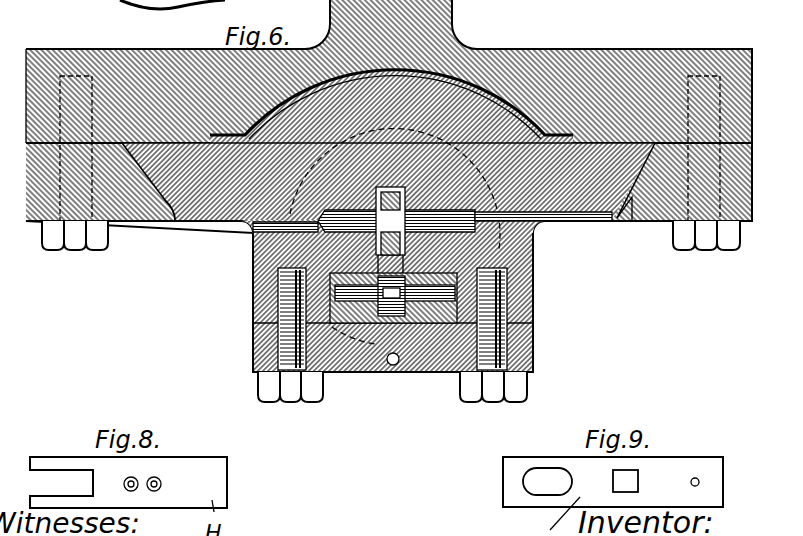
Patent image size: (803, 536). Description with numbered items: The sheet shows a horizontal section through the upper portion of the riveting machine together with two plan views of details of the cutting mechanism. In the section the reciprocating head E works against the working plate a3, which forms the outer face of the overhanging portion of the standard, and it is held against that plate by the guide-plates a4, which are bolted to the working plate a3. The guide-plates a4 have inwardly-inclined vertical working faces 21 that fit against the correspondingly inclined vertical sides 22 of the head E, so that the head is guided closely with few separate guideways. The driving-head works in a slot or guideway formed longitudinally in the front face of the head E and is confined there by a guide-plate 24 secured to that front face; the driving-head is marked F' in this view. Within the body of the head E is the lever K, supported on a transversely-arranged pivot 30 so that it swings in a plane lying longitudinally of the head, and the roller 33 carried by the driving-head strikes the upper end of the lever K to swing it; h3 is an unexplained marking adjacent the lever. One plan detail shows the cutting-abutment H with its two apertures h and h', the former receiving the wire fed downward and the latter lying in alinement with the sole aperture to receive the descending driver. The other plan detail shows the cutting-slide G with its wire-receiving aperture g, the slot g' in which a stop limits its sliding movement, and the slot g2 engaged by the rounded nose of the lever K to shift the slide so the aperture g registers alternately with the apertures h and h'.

In FIG. 6, the working plate a3 is at (510, 62).
In FIG. 6, the guide-plates a4 is at (143, 210).
In FIG. 6, the inwardly-inclined vertical working faces 21 is at (100, 223).
In FIG. 6, the inclined vertical sides 22 is at (176, 202).
In FIG. 6, the reciprocating head E is at (220, 195).
In FIG. 6, the pivot 30 is at (300, 214).
In FIG. 6, the lever K is at (407, 237).
In FIG. 6, the guide-plate 24 is at (444, 373).
In FIG. 6, the slide block F' is at (390, 359).
In FIG. 6, the valve stem h3 is at (374, 373).
In FIG. 6, the roller 33 is at (404, 364).
In FIG. 8, the aperture h' is at (74, 481).
In FIG. 8, the aperture h is at (160, 478).
In FIG. 9, the slot g' is at (524, 502).
In FIG. 9, the slot g2 is at (626, 481).
In FIG. 9, the aperture g is at (722, 478).